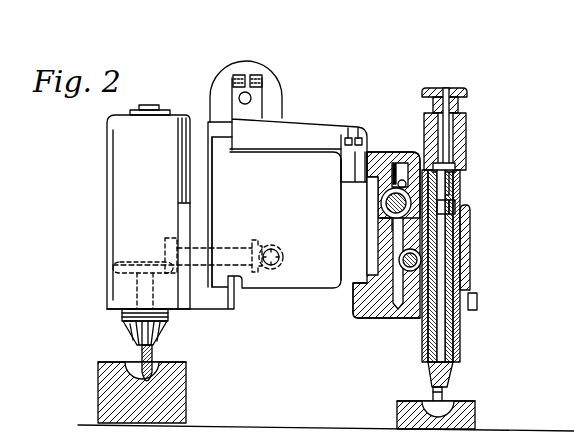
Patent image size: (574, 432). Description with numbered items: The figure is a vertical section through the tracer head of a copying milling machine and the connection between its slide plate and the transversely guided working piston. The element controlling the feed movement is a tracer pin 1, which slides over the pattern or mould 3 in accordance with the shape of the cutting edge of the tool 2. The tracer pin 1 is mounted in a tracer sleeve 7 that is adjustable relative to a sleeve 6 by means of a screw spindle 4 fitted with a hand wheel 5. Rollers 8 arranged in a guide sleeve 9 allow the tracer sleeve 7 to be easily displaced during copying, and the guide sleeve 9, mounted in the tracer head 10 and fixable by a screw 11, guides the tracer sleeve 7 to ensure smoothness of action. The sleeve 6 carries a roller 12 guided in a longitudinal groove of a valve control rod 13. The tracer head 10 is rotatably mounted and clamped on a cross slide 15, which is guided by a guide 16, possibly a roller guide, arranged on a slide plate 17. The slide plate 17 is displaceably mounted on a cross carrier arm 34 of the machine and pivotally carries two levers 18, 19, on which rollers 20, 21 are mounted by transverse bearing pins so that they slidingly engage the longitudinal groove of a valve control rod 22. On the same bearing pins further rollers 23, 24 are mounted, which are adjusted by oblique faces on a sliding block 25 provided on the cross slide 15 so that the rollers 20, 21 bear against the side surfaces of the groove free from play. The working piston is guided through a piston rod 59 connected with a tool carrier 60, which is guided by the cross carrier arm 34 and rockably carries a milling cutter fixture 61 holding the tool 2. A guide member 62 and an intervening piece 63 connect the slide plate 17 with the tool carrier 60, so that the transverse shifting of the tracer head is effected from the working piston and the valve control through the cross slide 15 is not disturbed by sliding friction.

The tracer pin 1 is at (447, 405).
The tool 2 is at (137, 357).
The pattern or mould 3 is at (397, 408).
The screw spindle 4 is at (455, 175).
The hand wheel 5 is at (453, 92).
The sleeve 6 is at (460, 120).
The tracer sleeve 7 is at (450, 378).
The rollers 8 is at (425, 357).
The guide sleeve 9 is at (460, 333).
The tracer head 10 is at (462, 256).
The screw 11 is at (476, 303).
The roller 12 is at (391, 272).
The valve control rod 13 is at (404, 260).
The cross slide 15 is at (403, 318).
The guide 16 is at (406, 153).
The slide plate 17 is at (373, 150).
The lever 18 is at (380, 193).
The lever 19 is at (385, 222).
The roller 20 is at (400, 210).
The roller 21 is at (364, 214).
The valve control rod 22 is at (385, 207).
The roller 23 is at (455, 207).
The roller 24 is at (475, 208).
The sliding block 25 is at (447, 190).
The cross carrier arm 34 is at (282, 281).
The piston rod 59 is at (245, 104).
The tool carrier 60 is at (206, 125).
The milling cutter fixture 61 is at (116, 176).
The guide member 62 is at (297, 128).
The intervening piece 63 is at (352, 137).